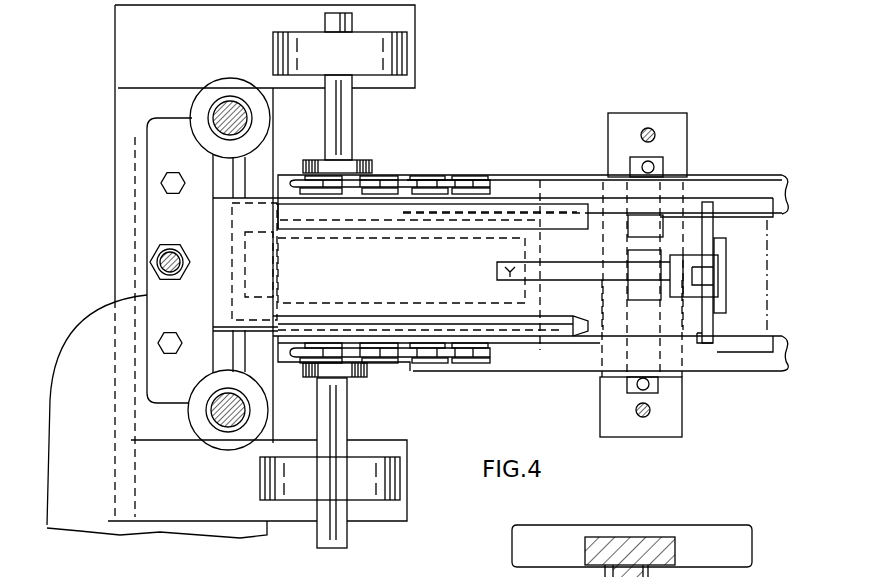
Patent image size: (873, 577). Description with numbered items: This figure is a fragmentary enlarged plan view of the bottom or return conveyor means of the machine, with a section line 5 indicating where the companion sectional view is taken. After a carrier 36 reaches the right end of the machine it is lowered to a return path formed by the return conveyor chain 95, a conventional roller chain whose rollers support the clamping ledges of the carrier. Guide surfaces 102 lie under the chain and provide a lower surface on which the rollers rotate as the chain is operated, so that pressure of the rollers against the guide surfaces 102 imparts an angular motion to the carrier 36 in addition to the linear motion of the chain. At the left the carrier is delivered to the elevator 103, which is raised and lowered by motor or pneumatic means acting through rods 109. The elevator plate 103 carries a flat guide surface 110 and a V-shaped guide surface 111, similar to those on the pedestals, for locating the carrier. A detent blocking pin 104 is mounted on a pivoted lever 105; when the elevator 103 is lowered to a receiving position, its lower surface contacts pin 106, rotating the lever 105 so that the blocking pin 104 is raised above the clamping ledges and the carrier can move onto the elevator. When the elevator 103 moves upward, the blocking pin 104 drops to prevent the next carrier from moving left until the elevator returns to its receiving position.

The rods 109 is at (227, 100).
The guide surfaces 102 is at (555, 176).
The carrier means 36 is at (762, 193).
The flat guide surface 110 is at (585, 232).
The elevator 103 is at (436, 274).
The pivoted lever 105 is at (522, 262).
The pin 106 is at (514, 280).
The V-shaped guide surface 111 is at (576, 314).
The detent blocking pin 104 is at (738, 351).
The return conveyor chain 95 is at (402, 370).
The section line 5- 5 is at (63, 280).